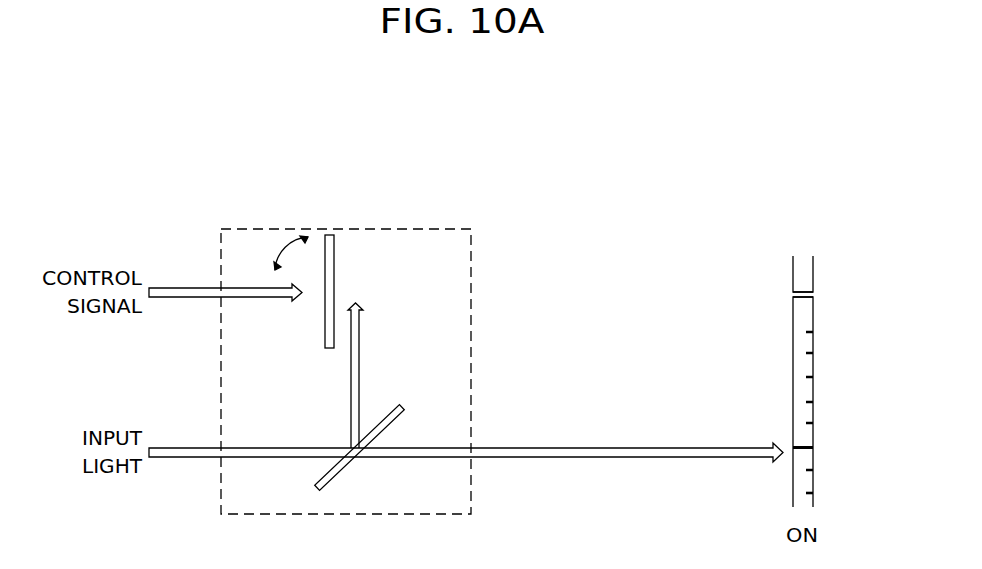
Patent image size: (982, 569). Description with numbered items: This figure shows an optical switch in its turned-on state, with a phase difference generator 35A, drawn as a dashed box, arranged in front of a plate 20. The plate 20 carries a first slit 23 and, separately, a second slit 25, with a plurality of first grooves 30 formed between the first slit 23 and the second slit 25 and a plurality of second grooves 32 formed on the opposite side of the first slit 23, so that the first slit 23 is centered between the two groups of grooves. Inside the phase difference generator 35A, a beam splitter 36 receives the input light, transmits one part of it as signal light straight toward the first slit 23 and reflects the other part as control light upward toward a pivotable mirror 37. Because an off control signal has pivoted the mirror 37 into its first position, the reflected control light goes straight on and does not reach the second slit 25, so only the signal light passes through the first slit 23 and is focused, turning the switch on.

The plate 20 is at (803, 262).
The second slit 25 is at (814, 294).
The first grooves 30 is at (814, 377).
The first slit 23 is at (814, 447).
The second grooves 32 is at (814, 493).
The phase difference generator 35A is at (471, 372).
The beam splitter 36 is at (343, 473).
The mirror 37 is at (334, 262).